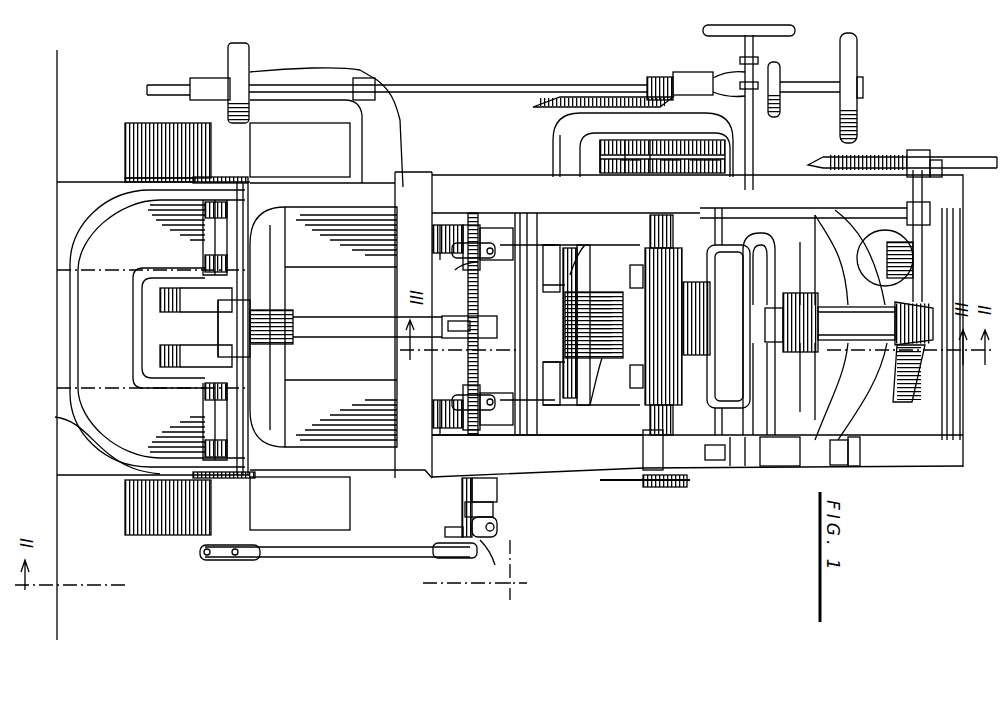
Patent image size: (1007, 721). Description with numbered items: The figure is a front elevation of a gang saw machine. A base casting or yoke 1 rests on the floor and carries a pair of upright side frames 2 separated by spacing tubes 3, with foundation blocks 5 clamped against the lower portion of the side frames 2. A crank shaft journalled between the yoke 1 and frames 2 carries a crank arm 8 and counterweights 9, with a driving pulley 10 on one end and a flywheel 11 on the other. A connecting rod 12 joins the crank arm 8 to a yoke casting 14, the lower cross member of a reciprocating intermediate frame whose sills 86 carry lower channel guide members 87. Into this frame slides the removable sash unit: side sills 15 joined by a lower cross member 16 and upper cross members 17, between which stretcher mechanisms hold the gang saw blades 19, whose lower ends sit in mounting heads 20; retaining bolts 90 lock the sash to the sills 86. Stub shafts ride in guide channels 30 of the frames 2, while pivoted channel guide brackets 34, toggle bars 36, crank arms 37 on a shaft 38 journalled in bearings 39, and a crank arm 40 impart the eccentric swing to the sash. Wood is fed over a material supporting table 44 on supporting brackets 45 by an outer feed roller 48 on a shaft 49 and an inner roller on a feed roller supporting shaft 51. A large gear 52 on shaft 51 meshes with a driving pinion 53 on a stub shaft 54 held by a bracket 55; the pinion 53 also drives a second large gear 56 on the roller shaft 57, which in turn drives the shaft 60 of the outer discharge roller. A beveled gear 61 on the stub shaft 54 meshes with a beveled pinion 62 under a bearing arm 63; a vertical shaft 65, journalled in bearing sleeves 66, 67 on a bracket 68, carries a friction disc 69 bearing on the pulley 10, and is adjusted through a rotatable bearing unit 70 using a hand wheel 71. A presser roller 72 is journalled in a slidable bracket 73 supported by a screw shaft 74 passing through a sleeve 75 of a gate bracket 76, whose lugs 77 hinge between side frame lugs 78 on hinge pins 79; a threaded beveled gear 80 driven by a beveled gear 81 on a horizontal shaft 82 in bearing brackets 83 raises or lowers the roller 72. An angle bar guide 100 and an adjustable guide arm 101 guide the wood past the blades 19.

The base casting or yoke 1 is at (57, 240).
The side frames or wall sections 2 is at (493, 180).
The spacing tubes or pipes 3 is at (537, 433).
The foundation blocks 5 is at (370, 365).
The crank arm 8 is at (293, 338).
The counterweights 9 is at (162, 345).
The driving pulley 10 is at (140, 135).
The flywheel 11 is at (165, 518).
The pitman or connecting rod 12 is at (343, 325).
The yoke casting 14 is at (585, 250).
The side sills 15 is at (632, 268).
The cross member 16 is at (550, 245).
The upper cross members 17 is at (905, 363).
The gang saw blades 19 is at (695, 285).
The mounting heads 20 is at (591, 334).
The guide channels 30 is at (505, 435).
The channel guide brackets 34 is at (475, 195).
The toggle bar or link 36 is at (440, 237).
The crank arm 37 is at (440, 257).
The shaft 38 is at (455, 274).
The bearings 39 is at (462, 490).
The crank arm 40 is at (495, 565).
The material supporting table 44 is at (472, 315).
The supporting brackets 45 is at (580, 200).
The outer feed roller 48 is at (683, 483).
The shaft 49 is at (663, 480).
The feed roller supporting shaft 51 is at (405, 547).
The large gear 52 is at (652, 150).
The driving pinion 53 is at (630, 288).
The stub shaft 54 is at (625, 145).
The bracket 55 is at (600, 140).
The second large gear 56 is at (795, 192).
The roller shaft 57 is at (835, 163).
The shaft 60 is at (655, 77).
The beveled gear 61 is at (535, 106).
The beveled pinion 62 is at (676, 72).
The bearing arm 63 is at (745, 72).
The vertical shaft 65 is at (460, 85).
The bearing sleeve 66 is at (363, 78).
The bearing sleeve 67 is at (208, 78).
The bracket 68 is at (335, 72).
The friction roller or disc 69 is at (243, 52).
The rotatable bearing unit 70 is at (780, 78).
The hand wheel 71 is at (850, 52).
The presser roller 72 is at (728, 360).
The vertically slidable bracket 73 is at (775, 460).
The screw shaft 74 is at (793, 306).
The sleeve 75 is at (847, 318).
The gate bracket 76 is at (835, 448).
The apertured lugs 77 is at (854, 467).
The apertured lugs or extensions 78 is at (735, 470).
The hinge pins 79 is at (880, 160).
The beveled gear 80 is at (900, 305).
The beveled gear 81 is at (957, 280).
The horizontal shaft 82 is at (940, 165).
The bearing brackets 83 is at (925, 305).
The side members or sills 86 is at (612, 175).
The lower channel guide members 87 is at (560, 200).
The retaining screws or bolts 90 is at (645, 485).
The angle bar guide 100 is at (700, 172).
The adjustable material guide block or arm 101 is at (723, 467).